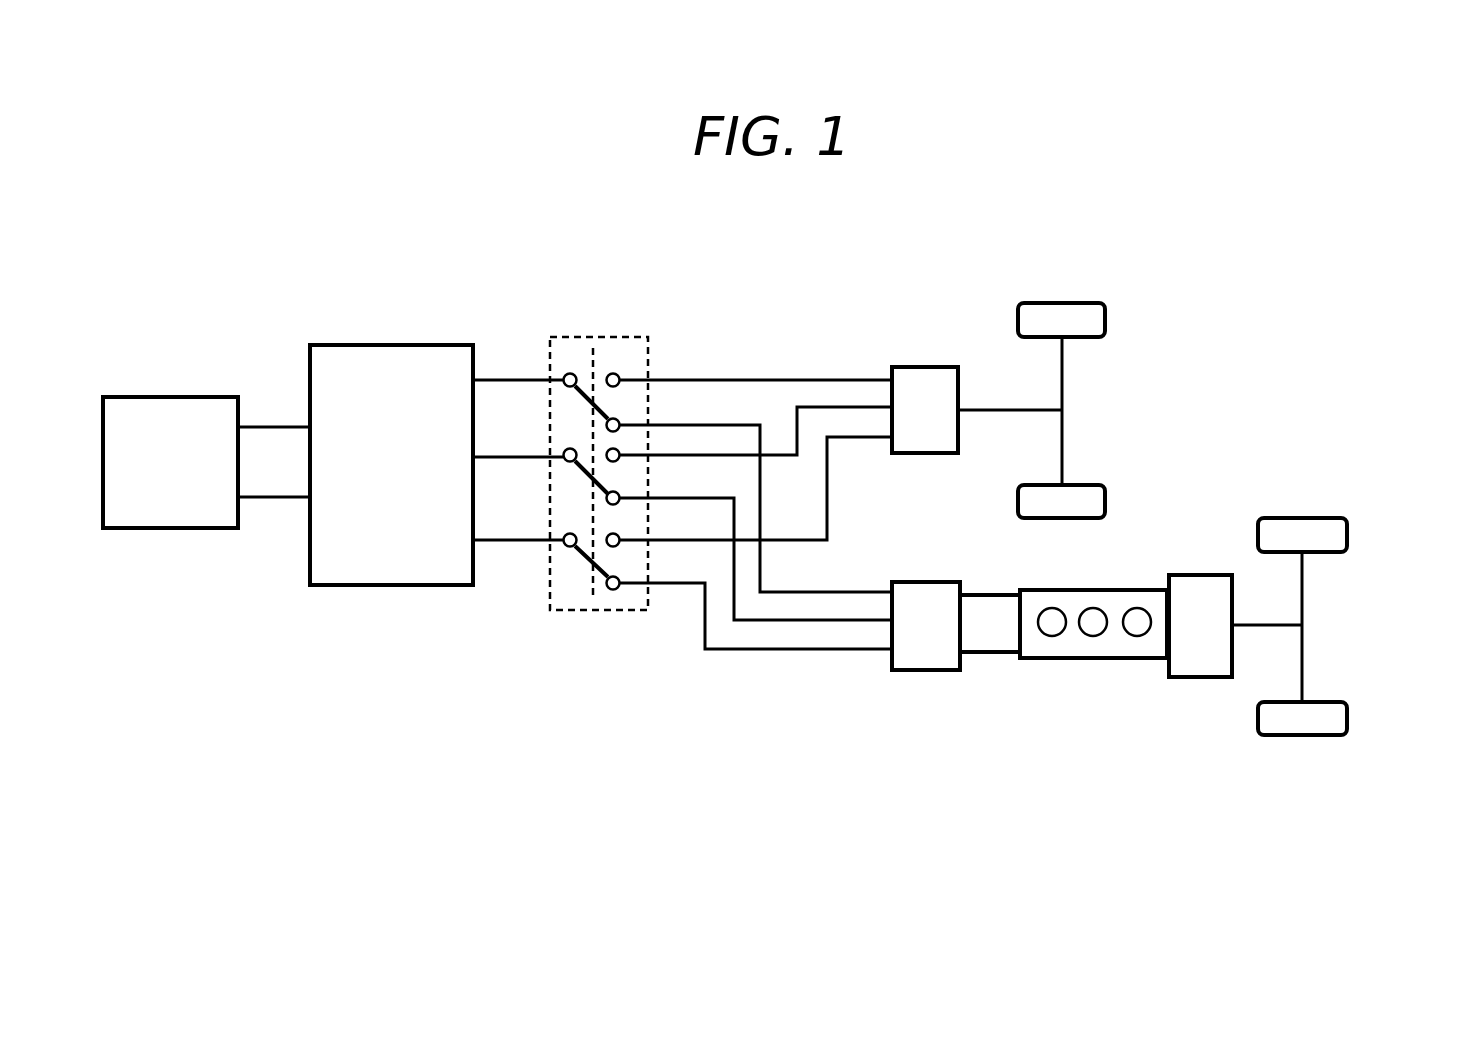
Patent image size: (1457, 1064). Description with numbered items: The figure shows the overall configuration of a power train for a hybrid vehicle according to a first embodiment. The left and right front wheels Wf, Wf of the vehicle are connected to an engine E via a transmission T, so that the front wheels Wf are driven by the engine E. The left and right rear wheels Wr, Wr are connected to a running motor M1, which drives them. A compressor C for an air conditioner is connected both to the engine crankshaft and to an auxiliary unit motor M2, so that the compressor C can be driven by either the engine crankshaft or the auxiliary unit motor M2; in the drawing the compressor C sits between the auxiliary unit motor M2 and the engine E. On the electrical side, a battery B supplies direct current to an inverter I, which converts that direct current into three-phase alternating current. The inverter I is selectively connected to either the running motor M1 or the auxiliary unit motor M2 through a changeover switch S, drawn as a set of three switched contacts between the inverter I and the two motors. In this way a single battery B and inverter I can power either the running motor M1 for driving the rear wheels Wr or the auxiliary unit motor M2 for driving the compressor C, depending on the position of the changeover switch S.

The battery B is at (170, 397).
The inverter I is at (393, 345).
The changeover switch S is at (600, 337).
The running motor M1 is at (924, 367).
The auxiliary unit motor M2 is at (926, 670).
The compressor C is at (991, 655).
The engine E is at (1093, 658).
The transmission T is at (1203, 677).
The rear wheels Wr is at (1105, 318).
The front wheels Wf is at (1347, 530).